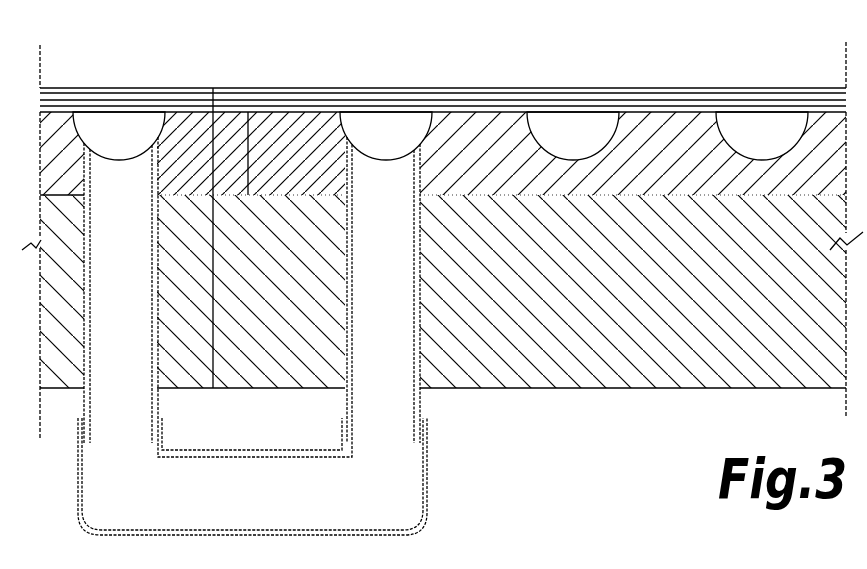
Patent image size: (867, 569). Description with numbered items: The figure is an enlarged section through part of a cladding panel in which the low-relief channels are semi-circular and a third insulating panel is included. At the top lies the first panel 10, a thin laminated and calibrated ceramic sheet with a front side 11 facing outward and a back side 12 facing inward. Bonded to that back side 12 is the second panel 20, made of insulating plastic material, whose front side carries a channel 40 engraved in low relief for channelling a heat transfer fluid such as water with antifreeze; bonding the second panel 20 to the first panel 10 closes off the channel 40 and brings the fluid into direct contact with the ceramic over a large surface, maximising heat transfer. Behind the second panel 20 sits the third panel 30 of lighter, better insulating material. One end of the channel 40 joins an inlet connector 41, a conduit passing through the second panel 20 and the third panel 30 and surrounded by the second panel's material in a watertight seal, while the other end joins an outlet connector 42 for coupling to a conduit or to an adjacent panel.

The first panel 10 is at (297, 97).
The front side 11 is at (370, 92).
The back side 12 is at (450, 112).
The second panel 20 is at (660, 148).
The third panel 30 is at (663, 308).
The channel 40 is at (134, 149).
The inlet connector 41 is at (360, 398).
The outlet connector 42 is at (143, 398).